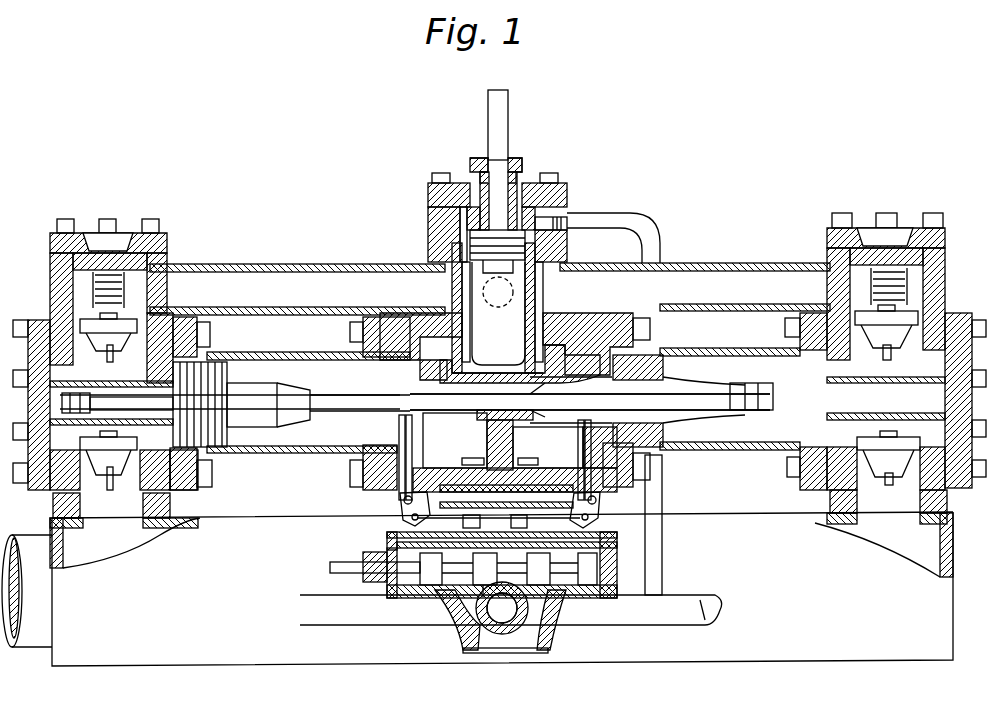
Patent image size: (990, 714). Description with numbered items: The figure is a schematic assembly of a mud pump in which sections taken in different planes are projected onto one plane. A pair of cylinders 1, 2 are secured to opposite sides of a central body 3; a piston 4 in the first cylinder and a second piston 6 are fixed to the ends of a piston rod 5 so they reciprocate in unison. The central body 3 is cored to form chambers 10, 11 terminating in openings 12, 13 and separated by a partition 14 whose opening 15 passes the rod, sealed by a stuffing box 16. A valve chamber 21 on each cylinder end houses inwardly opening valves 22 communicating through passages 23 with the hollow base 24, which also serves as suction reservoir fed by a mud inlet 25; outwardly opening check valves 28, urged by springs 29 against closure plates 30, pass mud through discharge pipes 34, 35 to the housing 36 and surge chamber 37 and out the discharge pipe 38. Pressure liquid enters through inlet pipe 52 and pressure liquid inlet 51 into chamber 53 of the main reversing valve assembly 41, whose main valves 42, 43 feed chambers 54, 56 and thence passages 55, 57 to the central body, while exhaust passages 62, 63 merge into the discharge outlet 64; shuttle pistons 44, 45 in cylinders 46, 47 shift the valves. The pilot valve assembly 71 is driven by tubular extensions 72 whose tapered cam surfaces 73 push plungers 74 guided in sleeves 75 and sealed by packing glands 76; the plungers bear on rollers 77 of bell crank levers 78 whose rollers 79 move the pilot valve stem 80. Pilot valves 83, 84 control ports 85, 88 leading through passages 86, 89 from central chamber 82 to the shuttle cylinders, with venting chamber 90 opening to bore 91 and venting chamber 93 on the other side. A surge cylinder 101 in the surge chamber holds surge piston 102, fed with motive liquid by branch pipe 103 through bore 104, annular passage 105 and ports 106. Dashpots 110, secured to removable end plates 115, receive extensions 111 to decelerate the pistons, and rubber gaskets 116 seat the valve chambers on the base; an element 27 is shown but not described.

The cylinder 1 is at (300, 452).
The cylinder 2 is at (765, 352).
The central body 3 is at (350, 330).
The piston 4 is at (210, 365).
The piston rod 5 is at (322, 396).
The second piston 6 is at (668, 368).
The chamber 10 is at (446, 424).
The chamber 11 is at (520, 425).
The opening 12 is at (410, 360).
The opening 13 is at (585, 335).
The partition 14 is at (470, 455).
The opening 15 is at (505, 385).
The stuffing box 16 is at (493, 388).
The valve chamber 21 is at (800, 470).
The inwardly opening valve 22 is at (890, 440).
The passage 23 is at (900, 500).
The hollow base 24 is at (903, 650).
The mud inlet 25 is at (31, 638).
The bolt 27 is at (212, 473).
The outwardly opening check valve 28 is at (84, 322).
The spring 29 is at (93, 285).
The closure plate 30 is at (58, 244).
The discharge pipe 34 is at (300, 264).
The discharge pipe 35 is at (740, 263).
The housing 36 is at (560, 250).
The surge chamber 37 is at (470, 285).
The discharge pipe 38 is at (515, 288).
The main reversing valve assembly 41 is at (368, 601).
The main valve 42 is at (500, 575).
The main valve 43 is at (552, 569).
The shuttle piston 44 is at (446, 569).
The shuttle piston 45 is at (587, 569).
The cylinder 46 is at (395, 598).
The cylinder 47 is at (599, 606).
The pressure liquid inlet 51 is at (478, 655).
The inlet pipe 52 is at (715, 595).
The chamber 53 is at (545, 638).
The chamber 54 is at (465, 635).
The passage 55 is at (448, 458).
The chamber 56 is at (555, 625).
The passage 57 is at (545, 430).
The exhaust passage 62 is at (440, 598).
The exhaust passage 63 is at (575, 596).
The discharge outlet 64 is at (493, 655).
The pilot valve assembly 71 is at (630, 505).
The tubular extension 72 is at (568, 345).
The tapered cam surface 73 is at (293, 382).
The plunger 74 is at (587, 433).
The guide sleeve 75 is at (406, 440).
The packing gland 76 is at (650, 466).
The roller 77 is at (612, 510).
The bell crank lever 78 is at (605, 515).
The roller 79 is at (417, 519).
The pilot valve stem 80 is at (395, 536).
The central chamber 82 is at (471, 454).
The pilot valve 83 is at (471, 522).
The pilot valve 84 is at (519, 522).
The port 85 is at (500, 610).
The passage 86 is at (365, 555).
The port 88 is at (554, 427).
The passage 89 is at (662, 533).
The venting chamber 90 is at (538, 457).
The bore 91 is at (453, 462).
The venting chamber 93 is at (434, 462).
The surge cylinder 101 is at (455, 262).
The surge piston 102 is at (470, 240).
The branch pipe 103 is at (655, 225).
The bore 104 is at (565, 222).
The annular passage 105 is at (565, 208).
The port 106 is at (430, 215).
The dashpot 110 is at (915, 360).
The extension 111 is at (720, 395).
The end plate 115 is at (950, 395).
The rubber gasket 116 is at (830, 505).